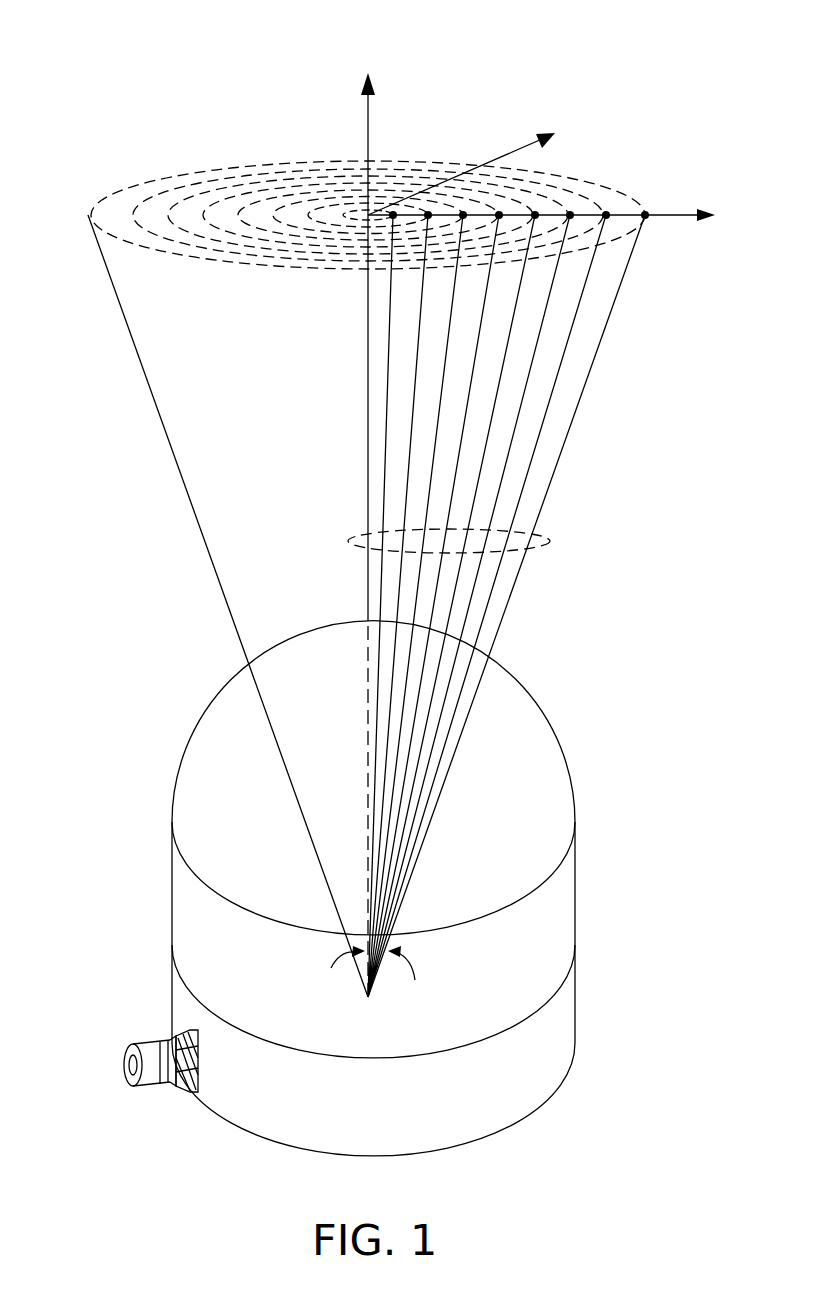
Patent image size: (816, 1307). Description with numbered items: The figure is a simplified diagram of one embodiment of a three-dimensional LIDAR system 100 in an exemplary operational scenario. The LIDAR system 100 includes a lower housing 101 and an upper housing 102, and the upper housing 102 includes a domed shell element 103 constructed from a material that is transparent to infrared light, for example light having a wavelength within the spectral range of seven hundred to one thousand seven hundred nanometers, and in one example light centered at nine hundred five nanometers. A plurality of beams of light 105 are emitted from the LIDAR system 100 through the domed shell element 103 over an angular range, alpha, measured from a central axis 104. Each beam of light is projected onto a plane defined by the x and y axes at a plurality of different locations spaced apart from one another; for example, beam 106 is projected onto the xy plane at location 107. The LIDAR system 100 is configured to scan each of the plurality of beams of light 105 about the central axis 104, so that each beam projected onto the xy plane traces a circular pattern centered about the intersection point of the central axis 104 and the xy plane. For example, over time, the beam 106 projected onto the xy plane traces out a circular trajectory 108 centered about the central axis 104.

The 3-D LIDAR system 100 is at (100, 66).
The lower housing 101 is at (573, 1015).
The upper housing 102 is at (590, 635).
The domed shell element 103 is at (512, 795).
The central axis 104 is at (368, 138).
The plurality of beams of light 105 is at (553, 541).
The beam 106 is at (608, 323).
The location 107 is at (648, 212).
The circular trajectory 108 is at (568, 180).